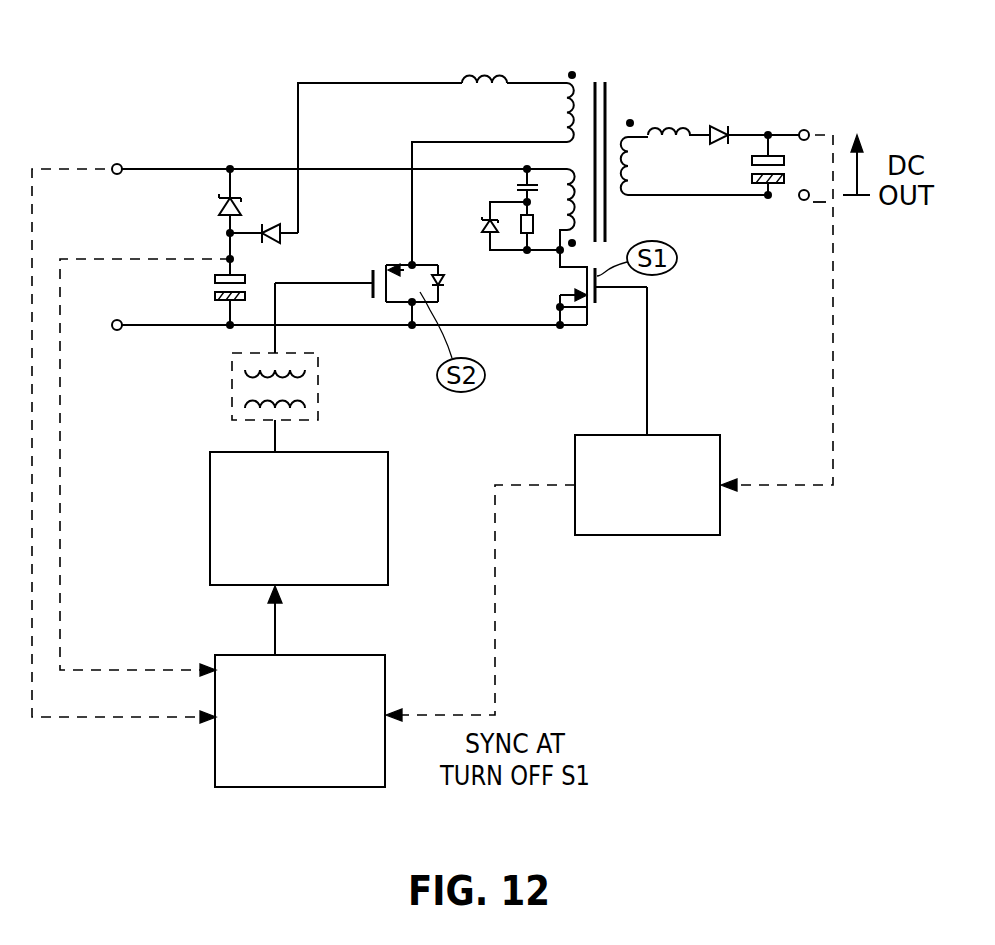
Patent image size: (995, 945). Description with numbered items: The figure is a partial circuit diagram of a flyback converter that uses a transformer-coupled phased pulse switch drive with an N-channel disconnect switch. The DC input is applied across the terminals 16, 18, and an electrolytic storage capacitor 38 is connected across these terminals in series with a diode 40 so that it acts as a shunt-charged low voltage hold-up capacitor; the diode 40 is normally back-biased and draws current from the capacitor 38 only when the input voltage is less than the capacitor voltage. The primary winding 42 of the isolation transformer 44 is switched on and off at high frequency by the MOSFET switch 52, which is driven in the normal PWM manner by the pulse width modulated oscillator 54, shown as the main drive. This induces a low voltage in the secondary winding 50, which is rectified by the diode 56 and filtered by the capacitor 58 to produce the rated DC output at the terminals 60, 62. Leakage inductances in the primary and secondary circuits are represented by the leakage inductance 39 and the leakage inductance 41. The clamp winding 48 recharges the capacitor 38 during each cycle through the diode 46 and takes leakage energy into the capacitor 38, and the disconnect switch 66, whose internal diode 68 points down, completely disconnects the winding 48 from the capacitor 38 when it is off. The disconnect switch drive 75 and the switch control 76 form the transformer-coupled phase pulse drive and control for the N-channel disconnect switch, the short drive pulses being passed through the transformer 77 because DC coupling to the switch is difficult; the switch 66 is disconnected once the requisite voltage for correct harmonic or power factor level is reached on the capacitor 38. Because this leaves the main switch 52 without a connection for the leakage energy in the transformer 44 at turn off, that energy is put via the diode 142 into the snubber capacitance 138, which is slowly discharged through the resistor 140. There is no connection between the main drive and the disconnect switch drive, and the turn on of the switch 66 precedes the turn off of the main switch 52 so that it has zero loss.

The terminal 16 is at (117, 175).
The terminal 18 is at (118, 319).
The storage capacitor 38 is at (213, 292).
The leakage inductance 39 is at (488, 73).
The diode 40 is at (218, 207).
The leakage inductance 41 is at (667, 130).
The primary winding 42 is at (577, 212).
The isolation transformer 44 is at (614, 76).
The diode 46 is at (270, 224).
The clamp winding 48 is at (565, 100).
The secondary winding 50 is at (632, 152).
The MOSFET switch 52 is at (573, 326).
The pulse width modulated oscillator 54 is at (667, 512).
The diode 56 is at (730, 125).
The capacitor 58 is at (752, 172).
The terminal 60 is at (808, 130).
The terminal 62 is at (806, 201).
The disconnect switch 66 is at (397, 261).
The internal diode 68 is at (446, 290).
The disconnect switch drive 75 is at (388, 525).
The switch control 76 is at (385, 768).
The transformer 77 is at (318, 398).
The snubber capacitance 138 is at (517, 185).
The resistor 140 is at (527, 238).
The diode 142 is at (483, 228).